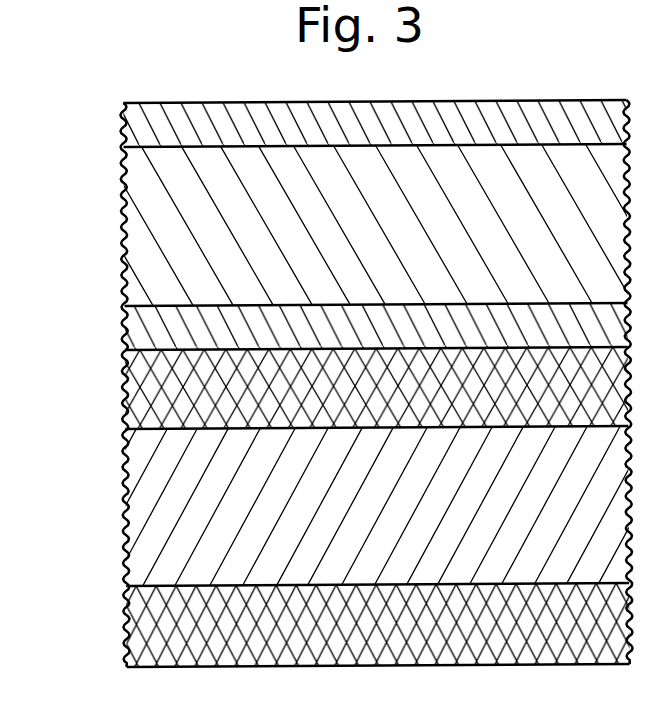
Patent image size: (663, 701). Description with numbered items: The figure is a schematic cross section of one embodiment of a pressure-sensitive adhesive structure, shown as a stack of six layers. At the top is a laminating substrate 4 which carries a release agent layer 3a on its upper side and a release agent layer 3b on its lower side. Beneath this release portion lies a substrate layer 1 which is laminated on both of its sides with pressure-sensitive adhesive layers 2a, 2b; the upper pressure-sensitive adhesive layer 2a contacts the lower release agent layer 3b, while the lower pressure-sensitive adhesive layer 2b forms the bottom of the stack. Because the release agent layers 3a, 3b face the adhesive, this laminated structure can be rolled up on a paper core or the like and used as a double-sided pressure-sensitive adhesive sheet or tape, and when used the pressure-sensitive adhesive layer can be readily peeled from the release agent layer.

The release agent layer 3a is at (130, 143).
The laminating substrate 4 is at (130, 235).
The release agent layer 3b is at (130, 335).
The pressure-sensitive adhesive layer 2a is at (130, 397).
The substrate layer 1 is at (130, 503).
The pressure-sensitive adhesive layer 2b is at (130, 630).